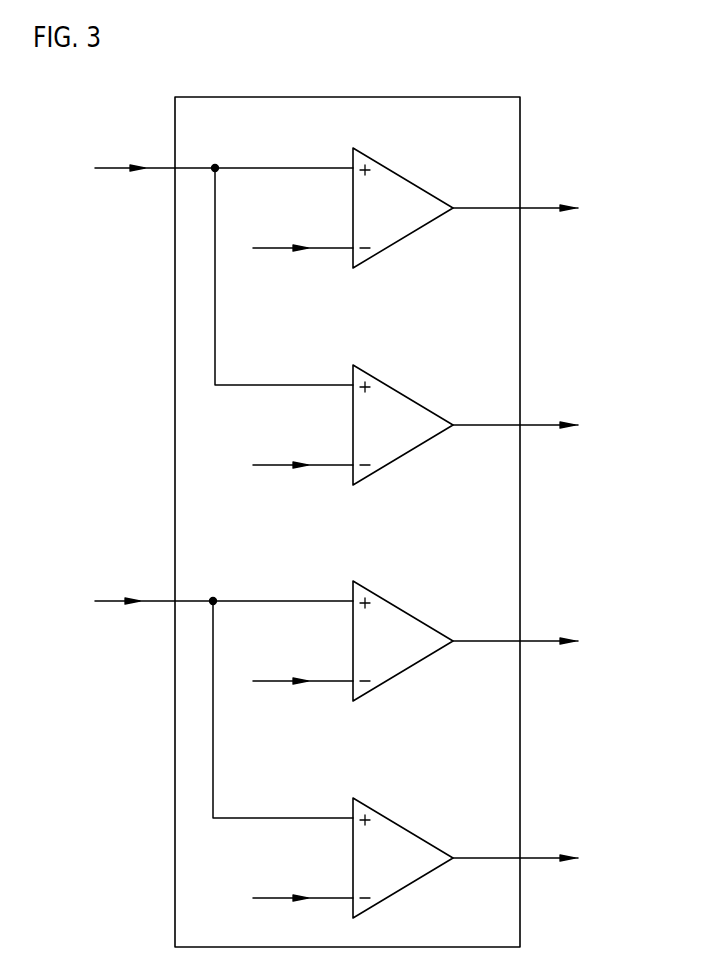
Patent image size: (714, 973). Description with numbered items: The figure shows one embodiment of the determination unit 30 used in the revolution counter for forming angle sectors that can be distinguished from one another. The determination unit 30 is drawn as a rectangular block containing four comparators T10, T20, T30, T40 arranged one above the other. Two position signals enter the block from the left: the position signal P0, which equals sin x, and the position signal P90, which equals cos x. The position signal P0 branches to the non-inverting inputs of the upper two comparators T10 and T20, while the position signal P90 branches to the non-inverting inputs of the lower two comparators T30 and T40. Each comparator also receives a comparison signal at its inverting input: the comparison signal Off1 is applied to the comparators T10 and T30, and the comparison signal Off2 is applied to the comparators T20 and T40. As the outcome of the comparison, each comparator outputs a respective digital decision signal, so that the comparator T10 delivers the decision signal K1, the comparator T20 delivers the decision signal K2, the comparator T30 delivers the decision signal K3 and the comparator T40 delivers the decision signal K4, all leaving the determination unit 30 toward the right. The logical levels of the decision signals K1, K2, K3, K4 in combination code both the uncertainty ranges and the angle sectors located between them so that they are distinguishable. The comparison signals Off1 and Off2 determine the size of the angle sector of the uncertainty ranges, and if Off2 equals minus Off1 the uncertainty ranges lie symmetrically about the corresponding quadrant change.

The determination unit 30 is at (175, 388).
The comparator T10 is at (407, 207).
The comparator T20 is at (407, 424).
The comparator T30 is at (407, 640).
The comparator T40 is at (407, 857).
The position signal P0 is at (205, 271).
The position signal P90 is at (203, 705).
The comparison signal Off1 is at (303, 452).
The comparison signal Off2 is at (303, 670).
The decision signal K1 is at (535, 208).
The decision signal K2 is at (536, 425).
The decision signal K3 is at (536, 641).
The decision signal K4 is at (536, 858).